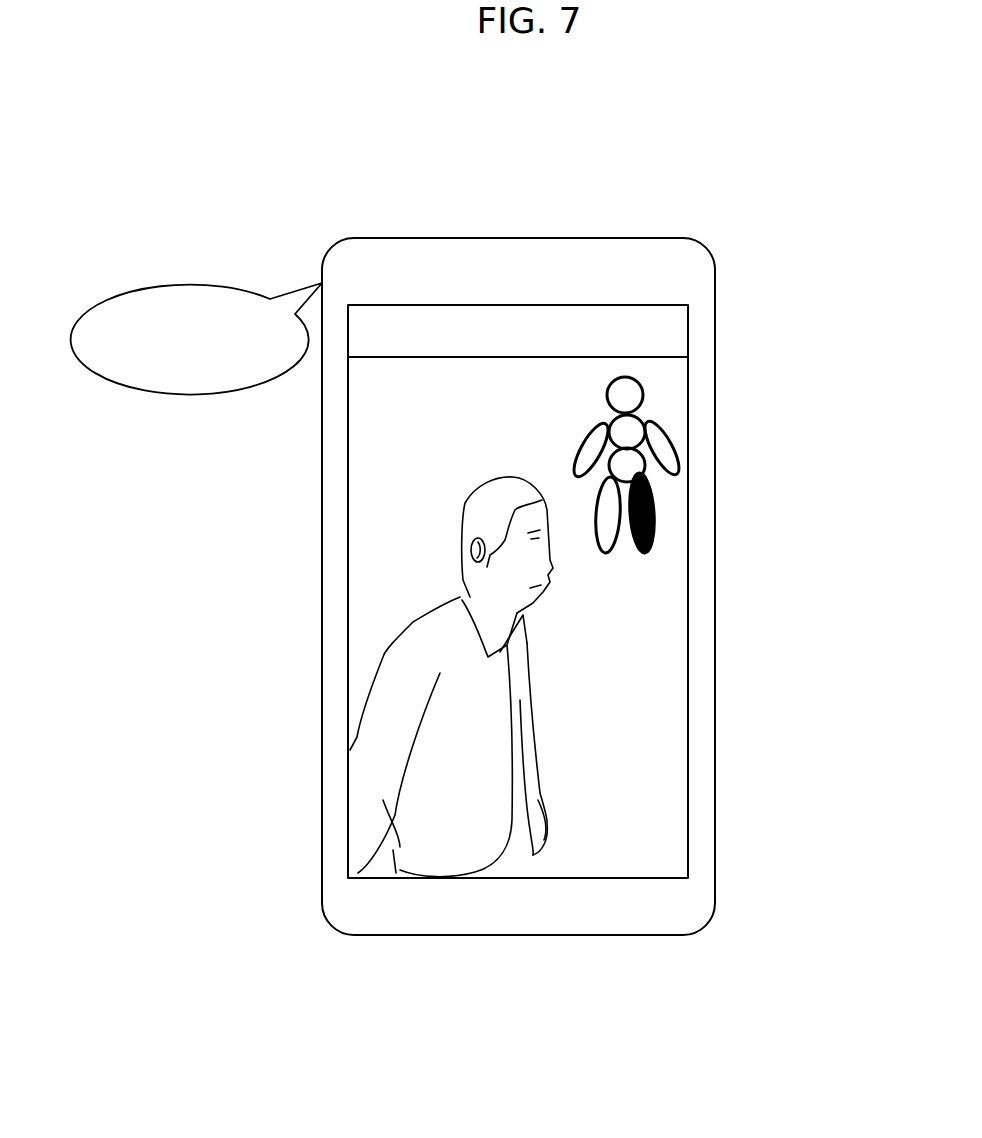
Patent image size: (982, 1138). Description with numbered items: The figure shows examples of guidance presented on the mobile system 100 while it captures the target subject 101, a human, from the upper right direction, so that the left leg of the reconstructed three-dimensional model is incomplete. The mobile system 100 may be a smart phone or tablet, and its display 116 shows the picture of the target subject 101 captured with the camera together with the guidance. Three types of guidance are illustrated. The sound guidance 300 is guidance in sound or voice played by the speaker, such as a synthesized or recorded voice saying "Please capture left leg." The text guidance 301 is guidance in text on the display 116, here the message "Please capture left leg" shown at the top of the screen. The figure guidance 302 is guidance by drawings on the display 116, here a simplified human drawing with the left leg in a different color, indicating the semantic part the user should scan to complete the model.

The mobile system 100 is at (647, 238).
The target subject 101 is at (427, 615).
The display 116 is at (650, 762).
The sound guidance 300 is at (168, 389).
The text guidance 301 is at (688, 332).
The figure guidance 302 is at (668, 438).